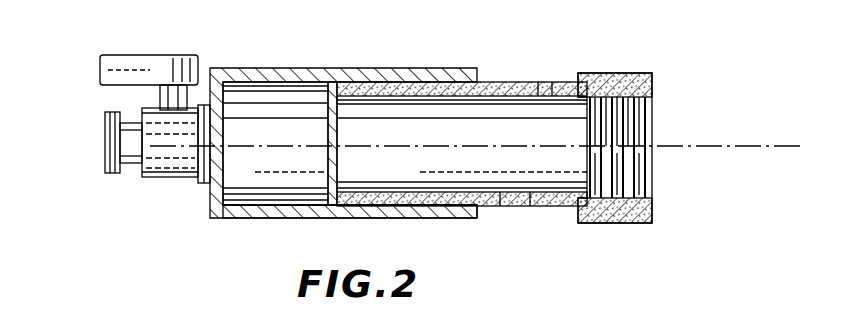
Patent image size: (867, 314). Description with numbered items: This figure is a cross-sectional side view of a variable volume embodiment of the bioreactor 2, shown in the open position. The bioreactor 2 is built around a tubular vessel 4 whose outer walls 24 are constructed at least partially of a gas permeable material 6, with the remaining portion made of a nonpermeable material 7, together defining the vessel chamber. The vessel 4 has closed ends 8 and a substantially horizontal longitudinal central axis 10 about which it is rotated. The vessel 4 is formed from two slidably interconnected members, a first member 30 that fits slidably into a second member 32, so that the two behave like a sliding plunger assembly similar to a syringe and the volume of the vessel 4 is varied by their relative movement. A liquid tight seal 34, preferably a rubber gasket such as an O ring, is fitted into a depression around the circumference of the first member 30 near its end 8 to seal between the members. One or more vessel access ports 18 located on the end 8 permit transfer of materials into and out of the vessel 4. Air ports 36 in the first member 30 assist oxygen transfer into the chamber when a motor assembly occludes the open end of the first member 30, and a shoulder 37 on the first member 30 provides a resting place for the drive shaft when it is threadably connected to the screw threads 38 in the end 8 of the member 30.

The bioreactor 2 is at (352, 139).
The vessel 4 is at (226, 136).
The gas permeable material 6 is at (650, 96).
The nonpermeable material 7 is at (323, 222).
The closed ends 8 is at (340, 150).
The substantially horizontal longitudinal central axis 10 is at (710, 146).
The vessel access port 18 is at (105, 120).
The outer walls 24 is at (435, 221).
The first member 30 is at (643, 126).
The second member 32 is at (272, 66).
The liquid tight seal 34 is at (377, 82).
The air ports 36 is at (552, 82).
The shoulder 37 is at (605, 73).
The threads 38 is at (628, 188).